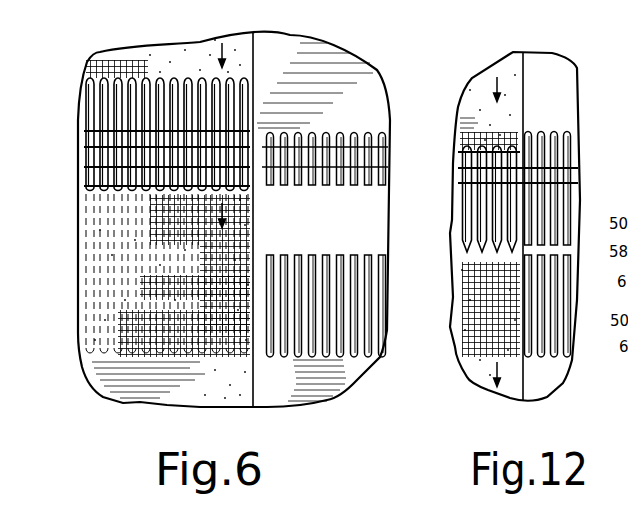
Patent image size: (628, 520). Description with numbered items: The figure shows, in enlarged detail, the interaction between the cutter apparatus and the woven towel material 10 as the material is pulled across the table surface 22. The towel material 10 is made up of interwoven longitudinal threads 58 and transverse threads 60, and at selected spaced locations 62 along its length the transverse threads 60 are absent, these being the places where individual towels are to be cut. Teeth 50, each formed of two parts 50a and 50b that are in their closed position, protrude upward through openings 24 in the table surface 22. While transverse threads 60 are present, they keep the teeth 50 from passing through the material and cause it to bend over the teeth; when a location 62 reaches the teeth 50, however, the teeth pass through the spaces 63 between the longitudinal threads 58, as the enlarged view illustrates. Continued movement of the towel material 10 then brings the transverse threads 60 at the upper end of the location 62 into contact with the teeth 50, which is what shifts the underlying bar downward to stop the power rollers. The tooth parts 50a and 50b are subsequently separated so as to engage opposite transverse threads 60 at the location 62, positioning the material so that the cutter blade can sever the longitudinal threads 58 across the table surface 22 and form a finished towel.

In FIG. 6, the towel material 10 is at (108, 383).
In FIG. 6, the table surface 22 is at (367, 92).
In FIG. 12, the table surface 22 is at (552, 70).
In FIG. 6, the openings 24 is at (372, 203).
In FIG. 12, the openings 24 is at (570, 203).
In FIG. 12, the teeth 50 is at (463, 169).
In FIG. 6, the tooth part 50a is at (90, 157).
In FIG. 6, the tooth part 50b is at (87, 175).
In FIG. 6, the longitudinal threads 58 is at (82, 103).
In FIG. 12, the longitudinal threads 58 is at (462, 233).
In FIG. 6, the transverse threads 60 is at (92, 72).
In FIG. 12, the transverse threads 60 is at (502, 147).
In FIG. 6, the locations 62 is at (253, 82).
In FIG. 6, the spaces 63 is at (93, 117).
In FIG. 12, the spaces 63 is at (467, 208).